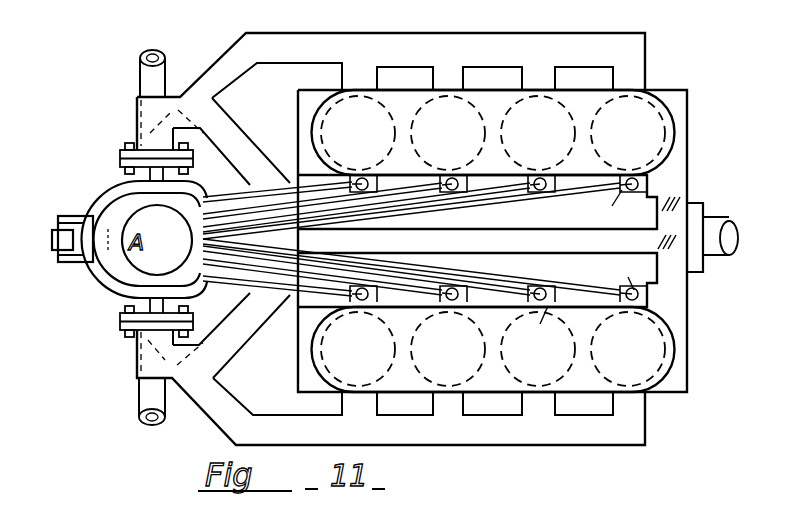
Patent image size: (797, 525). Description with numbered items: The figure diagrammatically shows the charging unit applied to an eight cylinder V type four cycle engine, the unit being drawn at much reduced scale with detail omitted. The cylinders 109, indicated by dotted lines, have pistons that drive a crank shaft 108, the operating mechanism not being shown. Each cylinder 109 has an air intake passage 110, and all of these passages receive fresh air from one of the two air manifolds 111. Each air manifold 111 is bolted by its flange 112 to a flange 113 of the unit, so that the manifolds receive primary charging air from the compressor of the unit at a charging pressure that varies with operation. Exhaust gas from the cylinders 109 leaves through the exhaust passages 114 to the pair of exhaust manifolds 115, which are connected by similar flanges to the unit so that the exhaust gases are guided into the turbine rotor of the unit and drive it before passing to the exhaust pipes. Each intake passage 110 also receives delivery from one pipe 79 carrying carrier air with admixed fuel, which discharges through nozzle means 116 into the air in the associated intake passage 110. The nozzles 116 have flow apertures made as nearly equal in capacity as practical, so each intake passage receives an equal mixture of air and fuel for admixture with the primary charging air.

The pipe 79 is at (233, 190).
The crank shaft 108 is at (730, 256).
The cylinder 109 is at (408, 124).
The air intake passage 110 is at (641, 186).
The air manifold 111 is at (680, 250).
The flange 112 is at (152, 146).
The flange 113 is at (120, 163).
The exhaust passage 114 is at (355, 76).
The exhaust manifold 115 is at (495, 240).
The nozzle means 116 is at (556, 178).